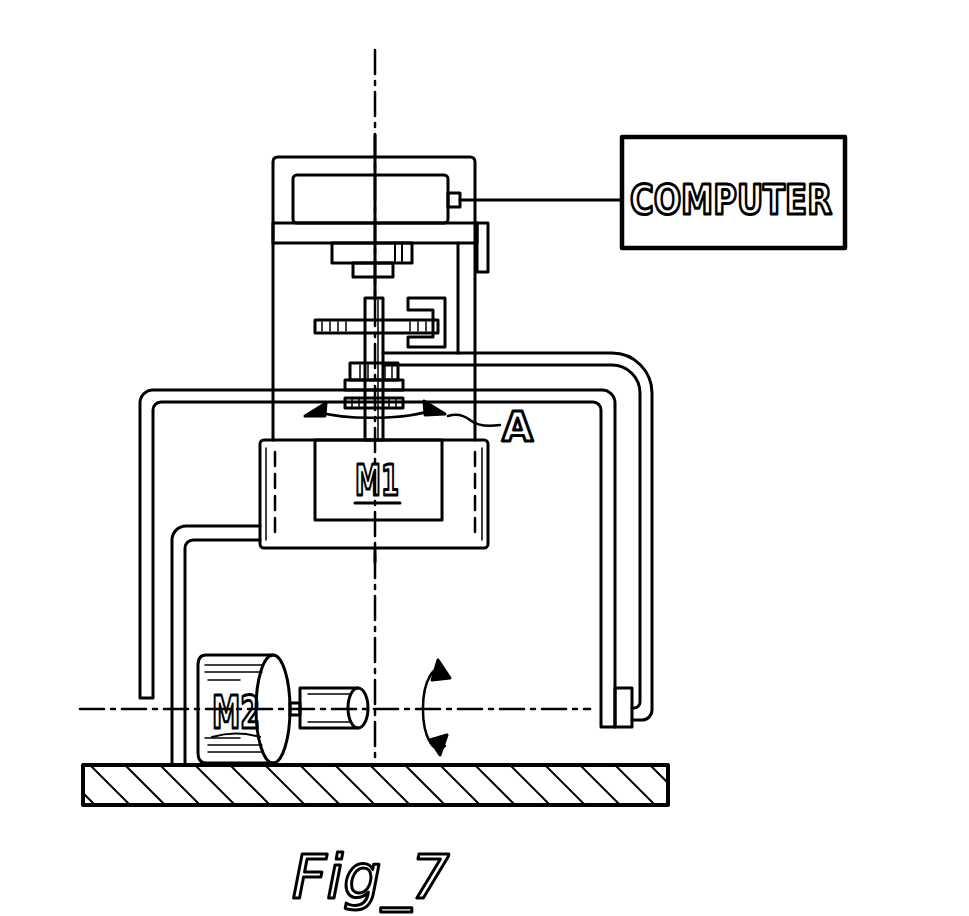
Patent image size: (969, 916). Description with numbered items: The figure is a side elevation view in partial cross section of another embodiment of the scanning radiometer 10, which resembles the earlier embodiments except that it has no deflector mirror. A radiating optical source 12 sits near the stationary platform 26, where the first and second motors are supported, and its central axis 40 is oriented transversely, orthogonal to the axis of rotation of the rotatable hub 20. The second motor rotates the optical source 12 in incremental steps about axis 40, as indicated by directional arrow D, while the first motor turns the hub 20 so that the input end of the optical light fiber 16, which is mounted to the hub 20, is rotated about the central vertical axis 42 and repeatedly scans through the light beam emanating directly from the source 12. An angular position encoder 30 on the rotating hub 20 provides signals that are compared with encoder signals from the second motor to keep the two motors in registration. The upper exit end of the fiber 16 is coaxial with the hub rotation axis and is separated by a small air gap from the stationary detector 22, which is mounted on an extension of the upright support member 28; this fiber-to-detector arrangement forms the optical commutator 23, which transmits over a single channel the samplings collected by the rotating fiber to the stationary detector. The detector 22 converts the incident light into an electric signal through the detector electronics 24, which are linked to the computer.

The scanning radiometer 10 is at (600, 122).
The radiating optical source 12 is at (328, 690).
The optical light fiber 16 is at (652, 613).
The rotatable hub 20 is at (601, 613).
The detector 22 is at (350, 272).
The optical commutator 23 is at (335, 300).
The detector electronics 24 is at (320, 193).
The stationary platform 26 is at (636, 765).
The upright support member 28 is at (273, 358).
The angular position encoder 30 is at (452, 328).
The central axis 40 is at (400, 708).
The central vertical axis 42 is at (377, 188).